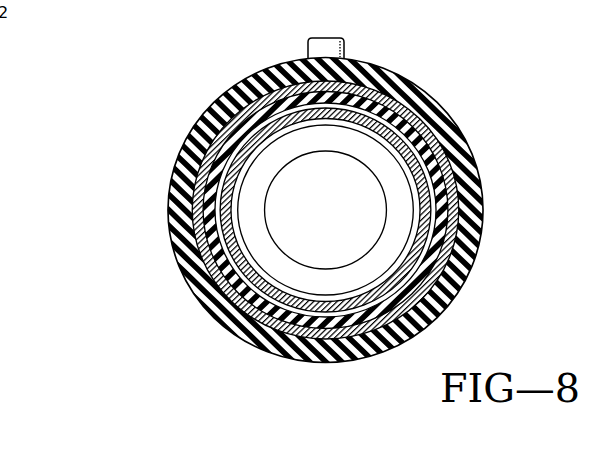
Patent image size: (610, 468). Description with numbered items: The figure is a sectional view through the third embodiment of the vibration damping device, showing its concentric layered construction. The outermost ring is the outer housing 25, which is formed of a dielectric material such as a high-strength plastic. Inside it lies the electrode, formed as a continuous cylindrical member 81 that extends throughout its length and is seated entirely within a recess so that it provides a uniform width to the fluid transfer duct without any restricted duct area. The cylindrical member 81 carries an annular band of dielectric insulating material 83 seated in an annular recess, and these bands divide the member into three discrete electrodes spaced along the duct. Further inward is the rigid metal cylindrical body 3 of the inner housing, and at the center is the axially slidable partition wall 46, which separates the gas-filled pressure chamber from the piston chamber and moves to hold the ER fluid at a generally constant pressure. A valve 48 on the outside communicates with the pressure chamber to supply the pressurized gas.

The cylindrical body 3 is at (273, 120).
The outer housing 25 is at (416, 82).
The partition wall 46 is at (352, 210).
The valve 48 is at (345, 47).
The continuous cylindrical member 81 is at (446, 157).
The annular band of dielectric insulating material 83 is at (217, 170).